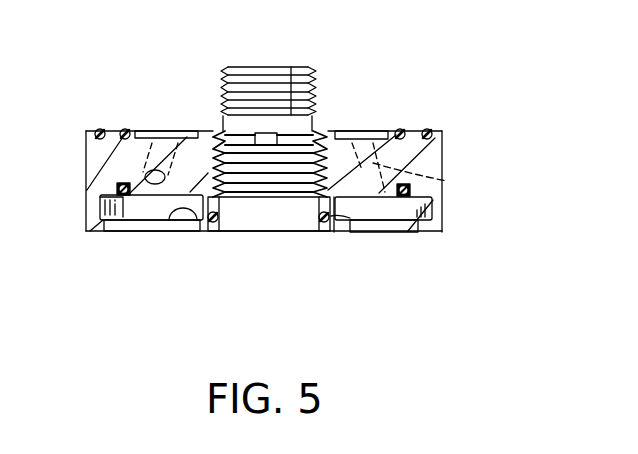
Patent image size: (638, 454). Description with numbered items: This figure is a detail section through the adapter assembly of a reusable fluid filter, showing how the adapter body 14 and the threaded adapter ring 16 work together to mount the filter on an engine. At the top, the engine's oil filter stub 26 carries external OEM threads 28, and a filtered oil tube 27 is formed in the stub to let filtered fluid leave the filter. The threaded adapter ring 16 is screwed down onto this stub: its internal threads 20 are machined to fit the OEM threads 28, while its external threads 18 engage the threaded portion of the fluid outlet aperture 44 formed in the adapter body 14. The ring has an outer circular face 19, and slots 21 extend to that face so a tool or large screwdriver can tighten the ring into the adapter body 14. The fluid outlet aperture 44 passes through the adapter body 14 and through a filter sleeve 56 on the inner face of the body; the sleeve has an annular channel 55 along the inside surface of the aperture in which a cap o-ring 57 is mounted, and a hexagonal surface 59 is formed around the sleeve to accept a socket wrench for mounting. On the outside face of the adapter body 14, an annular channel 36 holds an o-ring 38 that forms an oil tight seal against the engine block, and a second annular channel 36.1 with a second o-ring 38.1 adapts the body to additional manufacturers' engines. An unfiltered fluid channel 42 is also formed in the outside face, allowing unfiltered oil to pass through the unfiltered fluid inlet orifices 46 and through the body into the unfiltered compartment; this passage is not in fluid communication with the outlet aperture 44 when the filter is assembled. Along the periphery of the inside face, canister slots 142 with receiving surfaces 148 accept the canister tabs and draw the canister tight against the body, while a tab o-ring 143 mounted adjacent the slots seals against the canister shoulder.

The adapter body 14 is at (118, 140).
The threaded adapter ring 16 is at (324, 131).
The external threads 18 is at (212, 167).
The outer circular face 19 is at (218, 132).
The internal threads 20 is at (314, 128).
The slots 21 is at (267, 133).
The oil filter stub 26 is at (245, 80).
The filtered oil tube 27 is at (271, 85).
The external OEM threads 28 is at (313, 80).
The annular channel 36 is at (122, 140).
The o-ring 38 is at (97, 137).
The unfiltered fluid channel 42 is at (362, 132).
The fluid outlet aperture 44 is at (261, 216).
The unfiltered fluid inlet orifices 46 is at (447, 182).
The annular channel 55 is at (213, 223).
The filter sleeve 56 is at (329, 225).
The cap o-ring 57 is at (350, 218).
The hexagonal surface 59 is at (337, 220).
The canister slots 142 is at (150, 202).
The tab o-ring 143 is at (119, 196).
The receiving surfaces 148 is at (194, 222).
The second annular channel 36.1 is at (432, 140).
The second o-ring 38.1 is at (433, 131).